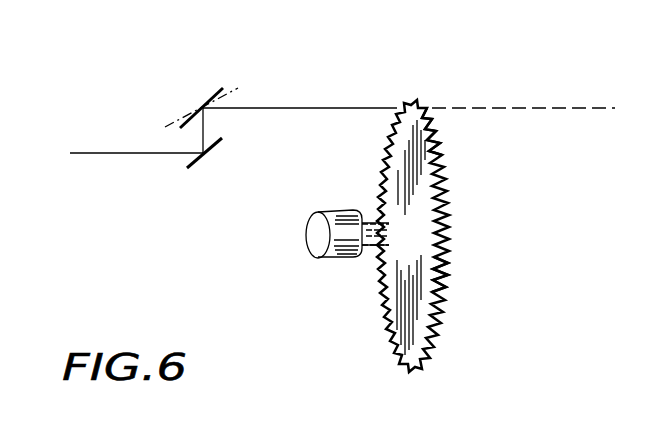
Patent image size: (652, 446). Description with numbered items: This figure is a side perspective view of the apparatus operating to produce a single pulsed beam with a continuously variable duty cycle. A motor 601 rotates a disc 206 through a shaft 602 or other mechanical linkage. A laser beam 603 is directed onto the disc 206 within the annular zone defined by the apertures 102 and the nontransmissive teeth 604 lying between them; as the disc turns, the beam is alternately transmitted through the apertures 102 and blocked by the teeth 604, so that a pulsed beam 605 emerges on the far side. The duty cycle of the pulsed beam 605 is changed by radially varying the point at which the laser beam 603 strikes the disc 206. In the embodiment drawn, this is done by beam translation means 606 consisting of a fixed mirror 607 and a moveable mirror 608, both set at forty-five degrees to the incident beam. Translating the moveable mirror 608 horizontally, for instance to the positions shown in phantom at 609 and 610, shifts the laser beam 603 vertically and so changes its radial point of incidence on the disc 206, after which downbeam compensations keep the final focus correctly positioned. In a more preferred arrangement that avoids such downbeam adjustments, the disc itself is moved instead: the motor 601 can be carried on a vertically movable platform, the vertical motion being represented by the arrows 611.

The apertures 102 is at (443, 148).
The disc 206 is at (447, 236).
The motor 601 is at (332, 212).
The shaft 602 is at (373, 252).
The laser beam 603 is at (318, 108).
The nontransmissive teeth 604 is at (440, 280).
The pulsed beam 605 is at (568, 108).
The beam translation means 606 is at (148, 142).
The fixed mirror 607 is at (194, 168).
The moveable mirror 608 is at (222, 88).
The phantom position of moveable mirror 609 is at (164, 130).
The phantom position of moveable mirror 610 is at (204, 124).
The arrows 611 is at (335, 175).